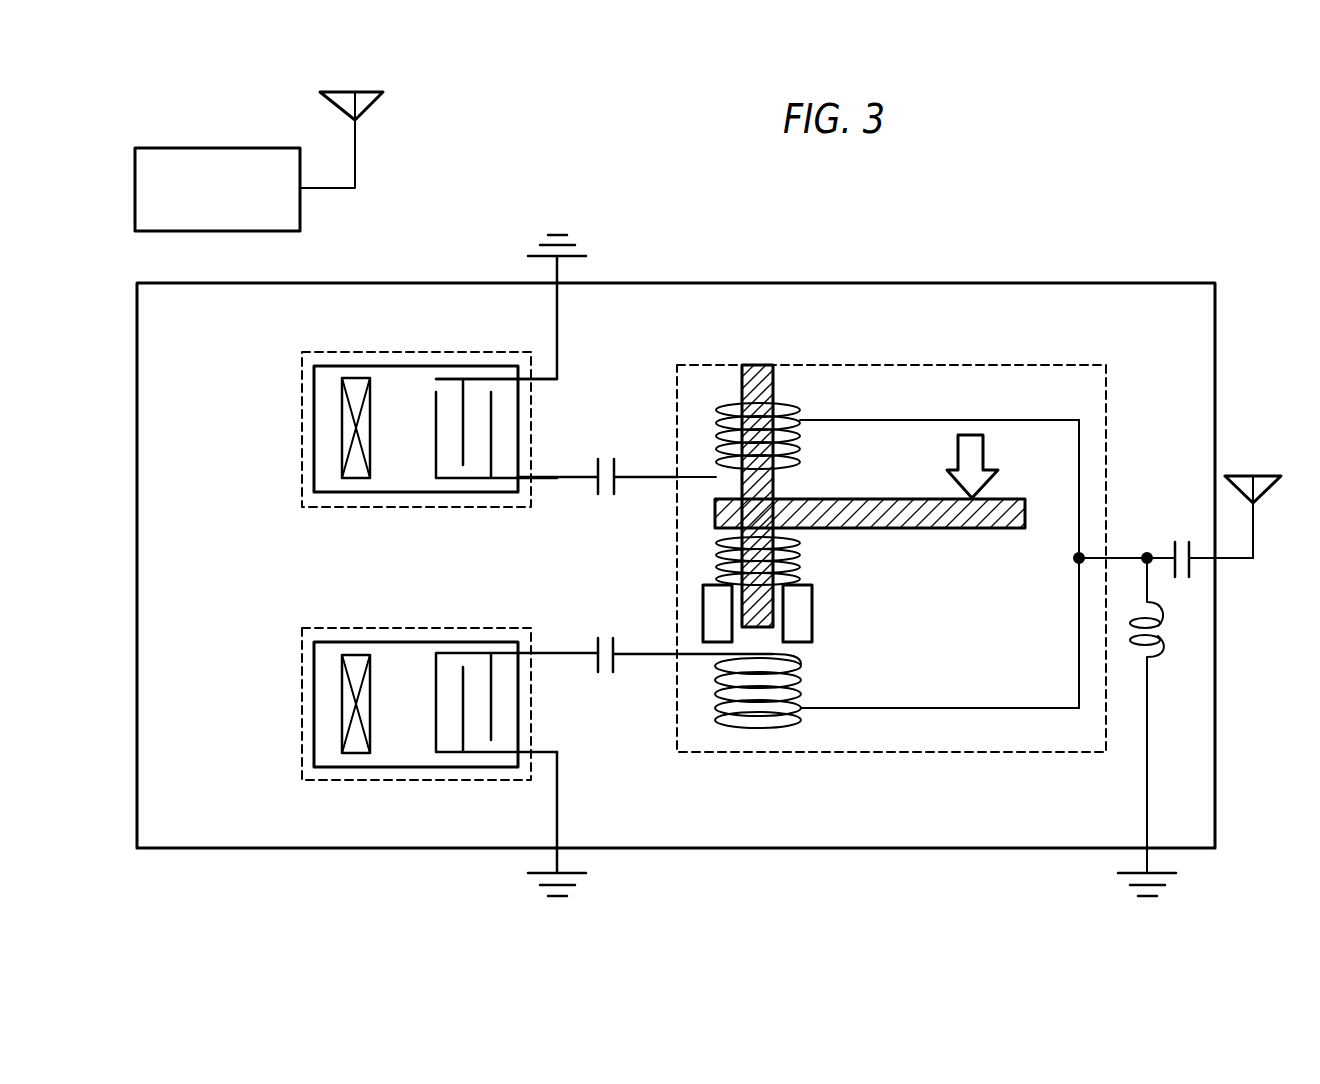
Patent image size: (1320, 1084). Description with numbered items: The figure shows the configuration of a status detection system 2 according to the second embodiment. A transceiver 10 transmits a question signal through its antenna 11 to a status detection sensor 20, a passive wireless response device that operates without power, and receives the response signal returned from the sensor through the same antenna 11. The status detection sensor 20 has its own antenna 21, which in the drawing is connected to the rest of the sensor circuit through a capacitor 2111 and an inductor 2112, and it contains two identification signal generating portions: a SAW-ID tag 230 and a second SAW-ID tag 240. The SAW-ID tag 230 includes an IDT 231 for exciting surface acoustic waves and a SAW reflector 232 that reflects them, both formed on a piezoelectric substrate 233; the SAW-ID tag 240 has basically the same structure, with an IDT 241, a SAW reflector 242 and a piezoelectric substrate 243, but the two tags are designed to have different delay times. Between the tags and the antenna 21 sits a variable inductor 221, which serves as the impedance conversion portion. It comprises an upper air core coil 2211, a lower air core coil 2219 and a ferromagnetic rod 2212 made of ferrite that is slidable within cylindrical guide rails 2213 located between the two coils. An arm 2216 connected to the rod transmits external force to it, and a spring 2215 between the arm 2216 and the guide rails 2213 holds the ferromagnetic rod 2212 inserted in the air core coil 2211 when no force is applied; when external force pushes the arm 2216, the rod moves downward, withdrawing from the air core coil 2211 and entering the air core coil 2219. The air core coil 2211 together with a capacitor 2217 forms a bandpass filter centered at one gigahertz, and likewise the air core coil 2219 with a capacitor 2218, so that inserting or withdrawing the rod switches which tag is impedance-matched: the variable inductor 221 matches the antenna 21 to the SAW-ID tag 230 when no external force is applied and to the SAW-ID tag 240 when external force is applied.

The status detection system 2 is at (1150, 240).
The transceiver 10 is at (205, 148).
The antenna 11 is at (320, 94).
The status detection sensor 20 is at (1215, 320).
The antenna 21 is at (1256, 476).
The variable inductor 221 is at (1106, 402).
The capacitor 2111 is at (1172, 540).
The inductor 2112 is at (1161, 648).
The air core coil 2211 is at (798, 396).
The ferromagnetic rod 2212 is at (756, 368).
The guide rails 2213 is at (703, 616).
The spring 2215 is at (806, 568).
The arm 2216 is at (1000, 532).
The capacitor 2217 is at (606, 456).
The capacitor 2218 is at (607, 676).
The air core coil 2219 is at (804, 684).
The SAW-ID tag 230 is at (448, 731).
The IDT 231 is at (492, 754).
The SAW reflector 232 is at (363, 754).
The piezoelectric substrate 233 is at (408, 754).
The SAW-ID tag 240 is at (427, 401).
The IDT 241 is at (484, 380).
The SAW reflector 242 is at (360, 378).
The piezoelectric substrate 243 is at (406, 380).